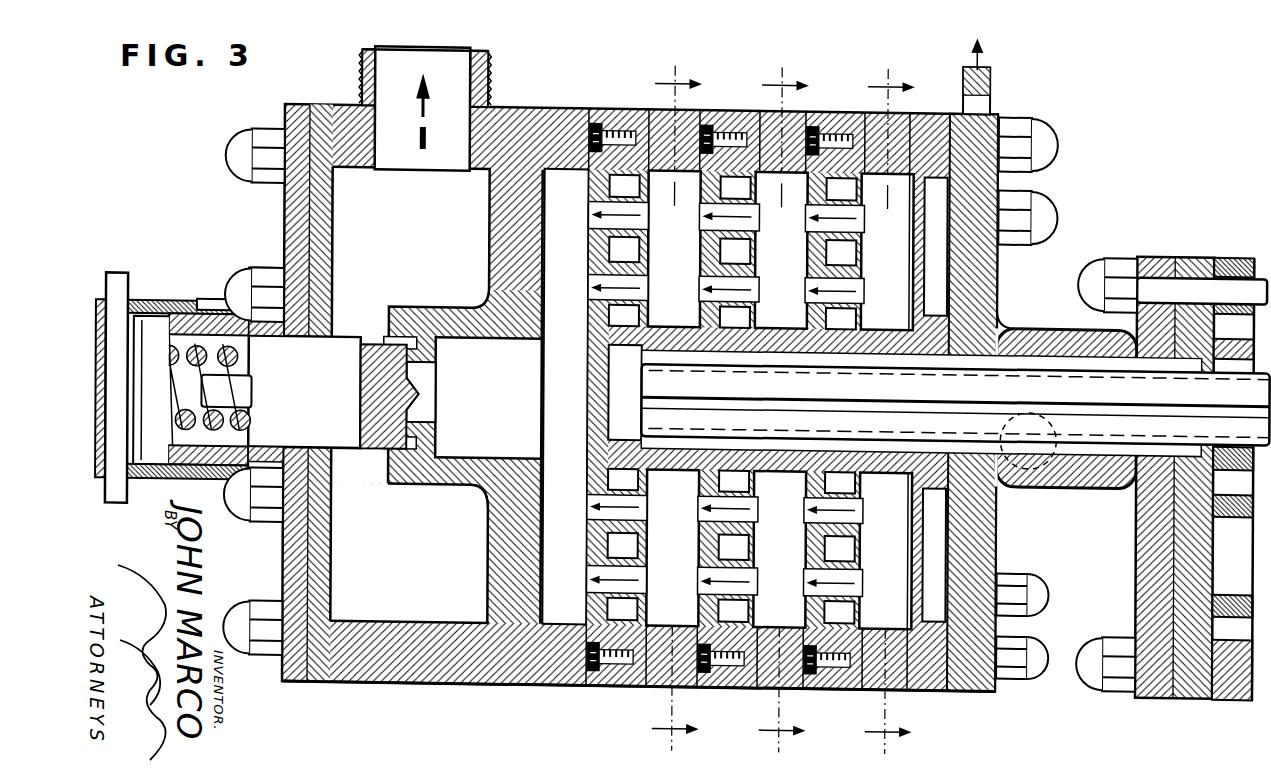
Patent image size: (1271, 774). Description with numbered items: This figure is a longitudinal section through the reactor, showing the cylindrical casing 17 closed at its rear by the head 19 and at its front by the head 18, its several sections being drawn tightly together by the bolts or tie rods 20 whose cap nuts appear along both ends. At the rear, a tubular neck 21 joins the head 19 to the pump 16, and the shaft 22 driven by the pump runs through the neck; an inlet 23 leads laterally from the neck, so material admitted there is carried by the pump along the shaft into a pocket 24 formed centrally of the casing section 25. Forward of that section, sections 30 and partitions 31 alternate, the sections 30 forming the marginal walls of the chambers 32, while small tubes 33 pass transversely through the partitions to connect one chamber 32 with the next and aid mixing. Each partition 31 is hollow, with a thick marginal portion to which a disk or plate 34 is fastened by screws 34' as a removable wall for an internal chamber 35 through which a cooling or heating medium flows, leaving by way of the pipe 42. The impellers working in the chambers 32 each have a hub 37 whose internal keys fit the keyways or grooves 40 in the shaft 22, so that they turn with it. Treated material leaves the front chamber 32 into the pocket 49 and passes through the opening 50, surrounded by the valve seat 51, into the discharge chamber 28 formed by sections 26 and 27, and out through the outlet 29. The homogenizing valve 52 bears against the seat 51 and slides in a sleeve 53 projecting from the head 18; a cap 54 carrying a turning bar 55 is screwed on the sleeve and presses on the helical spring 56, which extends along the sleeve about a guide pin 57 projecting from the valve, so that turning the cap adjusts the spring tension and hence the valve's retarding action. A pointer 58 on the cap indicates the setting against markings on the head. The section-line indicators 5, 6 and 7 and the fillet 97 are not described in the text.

The section line 5- 5 is at (676, 408).
The section line 6- 6 is at (889, 414).
The section line 7- 7 is at (783, 409).
The pump 16 is at (1166, 244).
The cylindrical casing 17 is at (512, 106).
The front head 18 is at (286, 210).
The rear head 19 is at (985, 262).
The bolts or tie rods 20 is at (232, 162).
The tubular neck 21 is at (1074, 320).
The shaft 22 is at (1010, 318).
The inlet 23 is at (1032, 460).
The pocket 24 is at (892, 300).
The casing section 25 is at (934, 104).
The front casing section 26 is at (372, 682).
The casing section 27 is at (530, 682).
The discharge chamber 28 is at (409, 553).
The outlet 29 is at (462, 70).
The sections 30 is at (598, 112).
The partitions 31 is at (628, 104).
The chambers 32 is at (733, 399).
The tubes 33 is at (590, 262).
The disk or plate 34 is at (674, 398).
The screws 34' is at (707, 378).
The partition chamber 35 is at (612, 312).
The hub 37 is at (752, 352).
The keyways or grooves 40 is at (800, 392).
The outlet pipe 42 is at (992, 90).
The pocket 49 is at (488, 398).
The opening 50 is at (440, 396).
The valve seat 51 is at (428, 410).
The homogenizing valve 52 is at (304, 391).
The sleeve 53 is at (188, 302).
The cap 54 is at (160, 302).
The turning bar 55 is at (120, 275).
The helical spring 56 is at (240, 357).
The guide pin 57 is at (255, 395).
The pointer 58 is at (230, 300).
The fillet wall 97 is at (468, 482).